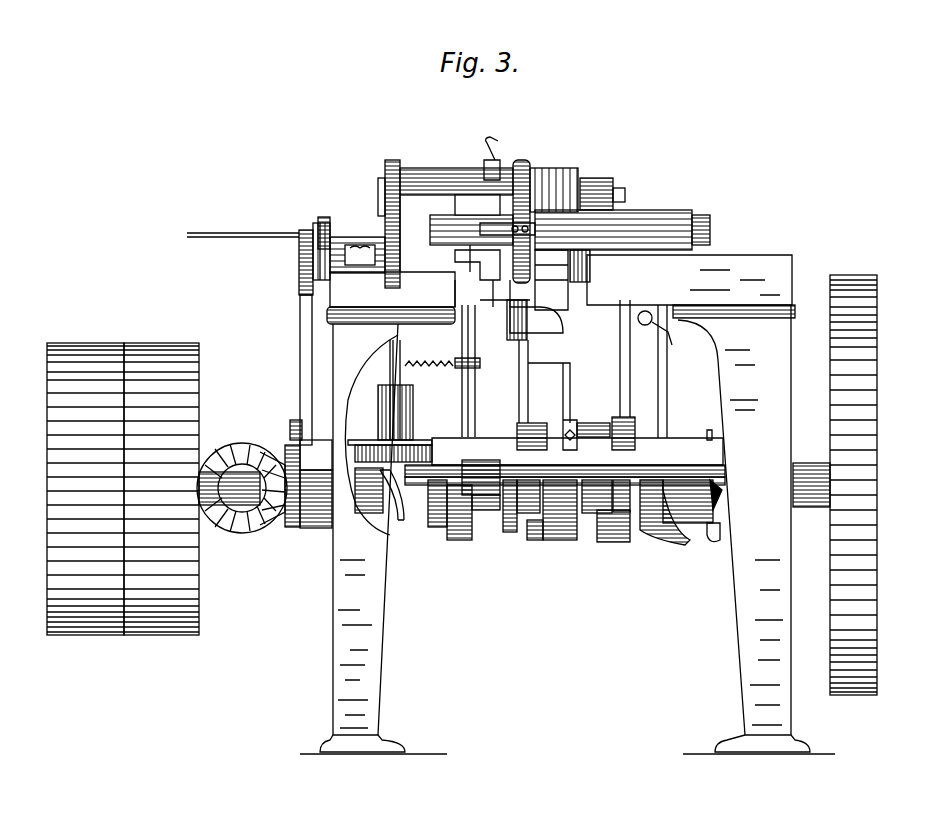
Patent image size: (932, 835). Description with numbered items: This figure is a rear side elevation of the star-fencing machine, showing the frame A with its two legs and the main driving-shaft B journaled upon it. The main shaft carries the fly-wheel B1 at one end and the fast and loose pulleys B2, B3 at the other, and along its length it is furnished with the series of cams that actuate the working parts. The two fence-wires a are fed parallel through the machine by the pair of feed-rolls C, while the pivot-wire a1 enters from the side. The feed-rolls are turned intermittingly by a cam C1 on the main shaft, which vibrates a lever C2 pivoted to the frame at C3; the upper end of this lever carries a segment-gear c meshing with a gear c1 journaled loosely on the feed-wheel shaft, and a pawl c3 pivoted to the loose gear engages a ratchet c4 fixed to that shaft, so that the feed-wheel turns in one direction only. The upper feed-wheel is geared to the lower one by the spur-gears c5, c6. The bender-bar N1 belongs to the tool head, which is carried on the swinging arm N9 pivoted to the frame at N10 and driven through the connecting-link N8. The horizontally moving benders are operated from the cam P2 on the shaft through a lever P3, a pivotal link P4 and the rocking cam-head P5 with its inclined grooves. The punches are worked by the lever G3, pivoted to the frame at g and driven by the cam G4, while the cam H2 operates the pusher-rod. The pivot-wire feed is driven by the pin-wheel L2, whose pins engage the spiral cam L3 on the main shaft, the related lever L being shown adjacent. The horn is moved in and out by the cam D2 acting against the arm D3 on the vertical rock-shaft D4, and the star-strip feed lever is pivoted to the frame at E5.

The frame A is at (750, 262).
The main driving-shaft B is at (246, 505).
The fly-wheel B1 is at (878, 478).
The fast pulley B2 is at (146, 343).
The loose pulley B3 is at (66, 343).
The feed-roll C is at (532, 170).
The cam C1 is at (292, 528).
The lever C2 is at (300, 340).
The pivot C3 is at (292, 425).
The fence-wire a is at (515, 218).
The pivot-wire a1 is at (243, 223).
The segment-gear c is at (297, 288).
The gear c1 is at (298, 244).
The pawl c3 is at (326, 228).
The ratchet c4 is at (312, 262).
The spur-gear c5 is at (388, 164).
The spur-gear c6 is at (386, 240).
The bender-bar N1 is at (432, 231).
The connecting-link N8 is at (534, 408).
The swinging arm N9 is at (548, 302).
The pivot N10 is at (562, 208).
The cam P2 is at (583, 546).
The lever P3 is at (614, 544).
The pivotal link P4 is at (630, 394).
The rocking cam-head P5 is at (612, 184).
The pivot g is at (658, 330).
The lever G3 is at (633, 375).
The cam G4 is at (678, 540).
The cam H2 is at (712, 542).
The lever L is at (404, 362).
The pin-wheel L2 is at (412, 444).
The spiral cam L3 is at (380, 516).
The cam D2 is at (480, 512).
The arm D3 is at (436, 444).
The vertical rock-shaft D4 is at (413, 394).
The pivot E5 is at (436, 530).